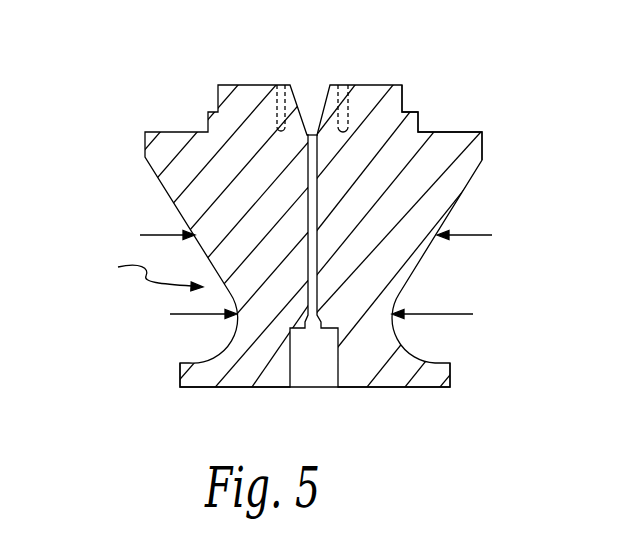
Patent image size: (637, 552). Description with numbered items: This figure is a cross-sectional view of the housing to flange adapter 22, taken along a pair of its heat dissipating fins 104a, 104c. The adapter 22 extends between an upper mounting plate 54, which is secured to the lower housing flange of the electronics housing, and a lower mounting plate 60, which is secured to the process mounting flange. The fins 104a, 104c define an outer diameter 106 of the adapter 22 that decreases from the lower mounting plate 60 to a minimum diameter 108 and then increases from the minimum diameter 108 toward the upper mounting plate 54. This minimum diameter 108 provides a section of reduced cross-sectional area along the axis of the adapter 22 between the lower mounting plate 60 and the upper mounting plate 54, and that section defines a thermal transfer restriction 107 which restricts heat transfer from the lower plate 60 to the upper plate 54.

The housing to flange adapter 22 is at (318, 234).
The mounting plate 54 is at (482, 132).
The heat dissipating fin 104a is at (203, 197).
The heat dissipating fin 104c is at (457, 171).
The outer diameter 106 is at (484, 237).
The thermal transfer restriction 107 is at (136, 272).
The minimum diameter 108 is at (465, 316).
The mounting plate 60 is at (430, 389).